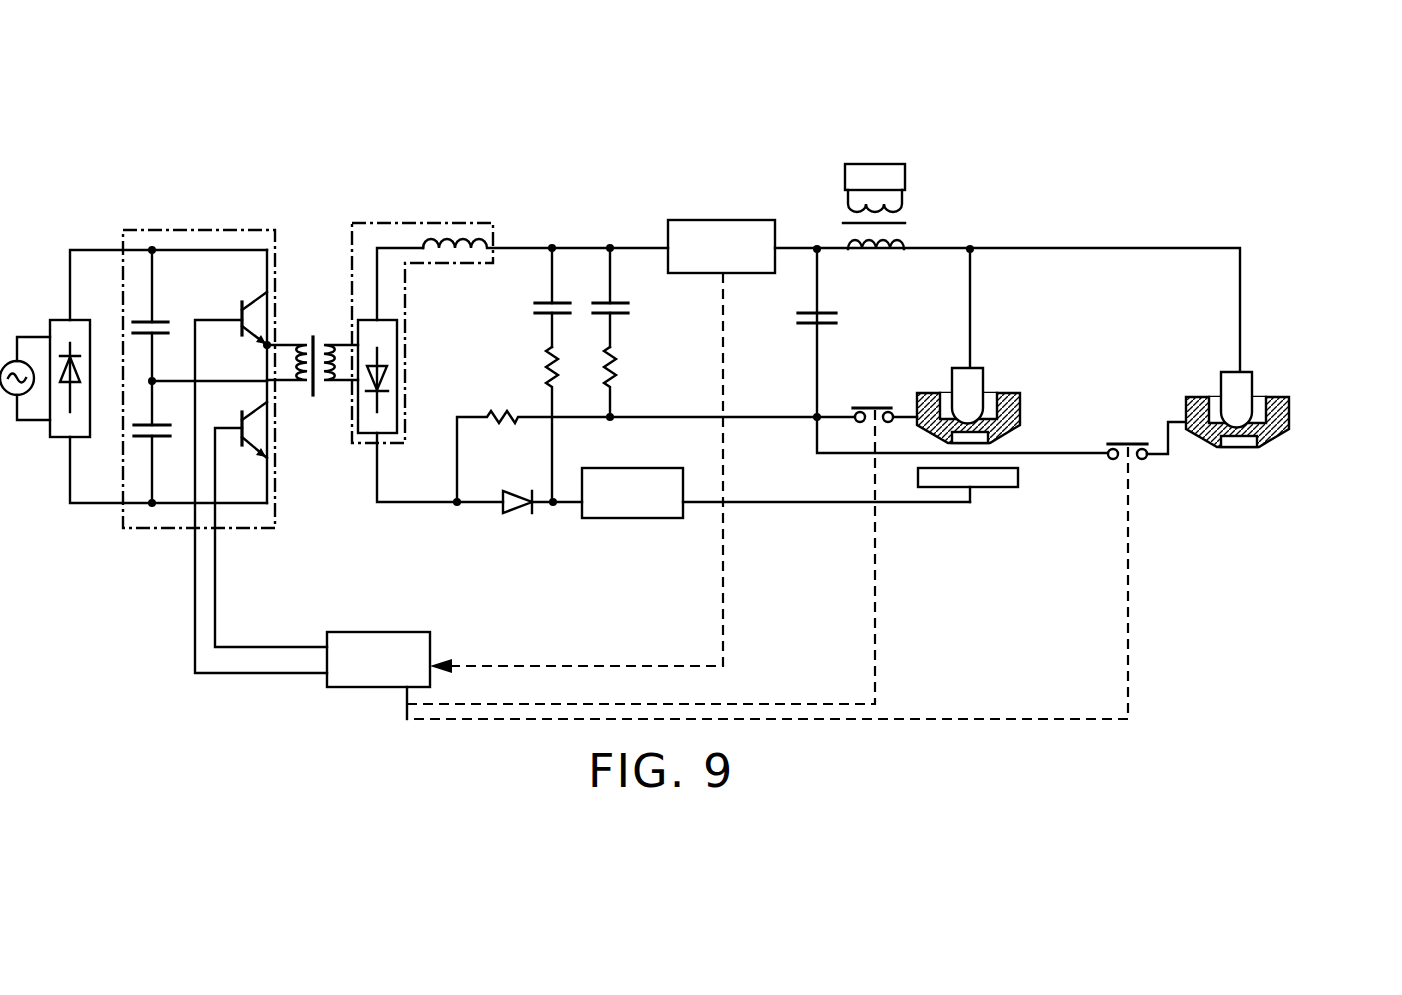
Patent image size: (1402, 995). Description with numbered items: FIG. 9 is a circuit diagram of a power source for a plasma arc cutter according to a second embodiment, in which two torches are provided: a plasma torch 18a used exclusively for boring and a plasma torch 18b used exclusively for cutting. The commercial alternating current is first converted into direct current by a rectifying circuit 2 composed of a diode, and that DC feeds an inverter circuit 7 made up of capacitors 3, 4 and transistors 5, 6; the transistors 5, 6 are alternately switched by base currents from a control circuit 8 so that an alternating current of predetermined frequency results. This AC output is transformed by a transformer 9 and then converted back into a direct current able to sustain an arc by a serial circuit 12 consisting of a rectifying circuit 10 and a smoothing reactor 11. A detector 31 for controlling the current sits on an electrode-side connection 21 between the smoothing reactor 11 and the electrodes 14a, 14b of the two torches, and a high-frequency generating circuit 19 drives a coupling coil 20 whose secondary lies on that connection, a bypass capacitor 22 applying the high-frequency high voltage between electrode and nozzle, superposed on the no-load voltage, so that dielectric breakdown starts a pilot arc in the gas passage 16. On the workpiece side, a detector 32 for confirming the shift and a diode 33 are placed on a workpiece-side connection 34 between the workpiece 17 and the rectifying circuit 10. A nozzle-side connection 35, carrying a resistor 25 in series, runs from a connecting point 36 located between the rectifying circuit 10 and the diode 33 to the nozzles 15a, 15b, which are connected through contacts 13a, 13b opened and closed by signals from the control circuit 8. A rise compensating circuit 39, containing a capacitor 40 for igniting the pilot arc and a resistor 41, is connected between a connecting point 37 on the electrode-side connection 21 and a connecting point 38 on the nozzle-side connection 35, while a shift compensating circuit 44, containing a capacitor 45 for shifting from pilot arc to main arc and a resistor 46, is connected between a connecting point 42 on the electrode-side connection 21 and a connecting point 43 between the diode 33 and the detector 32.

The rectifying circuit 2 is at (58, 440).
The capacitor 3 is at (166, 322).
The capacitor 4 is at (140, 438).
The transistor 5 is at (266, 307).
The transistor 6 is at (258, 428).
The inverter circuit 7 is at (215, 230).
The control circuit 8 is at (344, 690).
The transformer 9 is at (313, 395).
The rectifying circuit 10 is at (397, 321).
The smoothing reactor 11 is at (439, 226).
The serial circuit 12 is at (363, 222).
The contact 13a is at (874, 406).
The contact 13b is at (1125, 442).
The electrode 14a is at (951, 366).
The electrode 14b is at (1223, 368).
The nozzle 15a is at (1010, 392).
The nozzle 15b is at (1282, 398).
The gas passage 16 is at (983, 390).
The workpiece 17 is at (990, 488).
The plasma torch 18a is at (1011, 346).
The plasma torch 18b is at (1290, 380).
The high-frequency generating circuit 19 is at (904, 177).
The coupling coil 20 is at (906, 223).
The electrode-side connection 21 is at (792, 246).
The bypass capacitor 22 is at (820, 302).
The resistor 25 is at (502, 411).
The detector 31 is at (739, 218).
The detector 32 is at (641, 522).
The diode 33 is at (521, 514).
The workpiece-side connection 34 is at (900, 504).
The nozzle-side connection 35 is at (789, 420).
The connecting point 36 is at (458, 504).
The connecting point 37 is at (610, 246).
The connecting point 38 is at (611, 420).
The rise compensating circuit 39 is at (633, 332).
The capacitor 40 is at (618, 302).
The resistor 41 is at (618, 366).
The connecting point 42 is at (552, 246).
The connecting point 43 is at (554, 514).
The shift compensating circuit 44 is at (536, 375).
The capacitor 45 is at (563, 302).
The resistor 46 is at (554, 360).